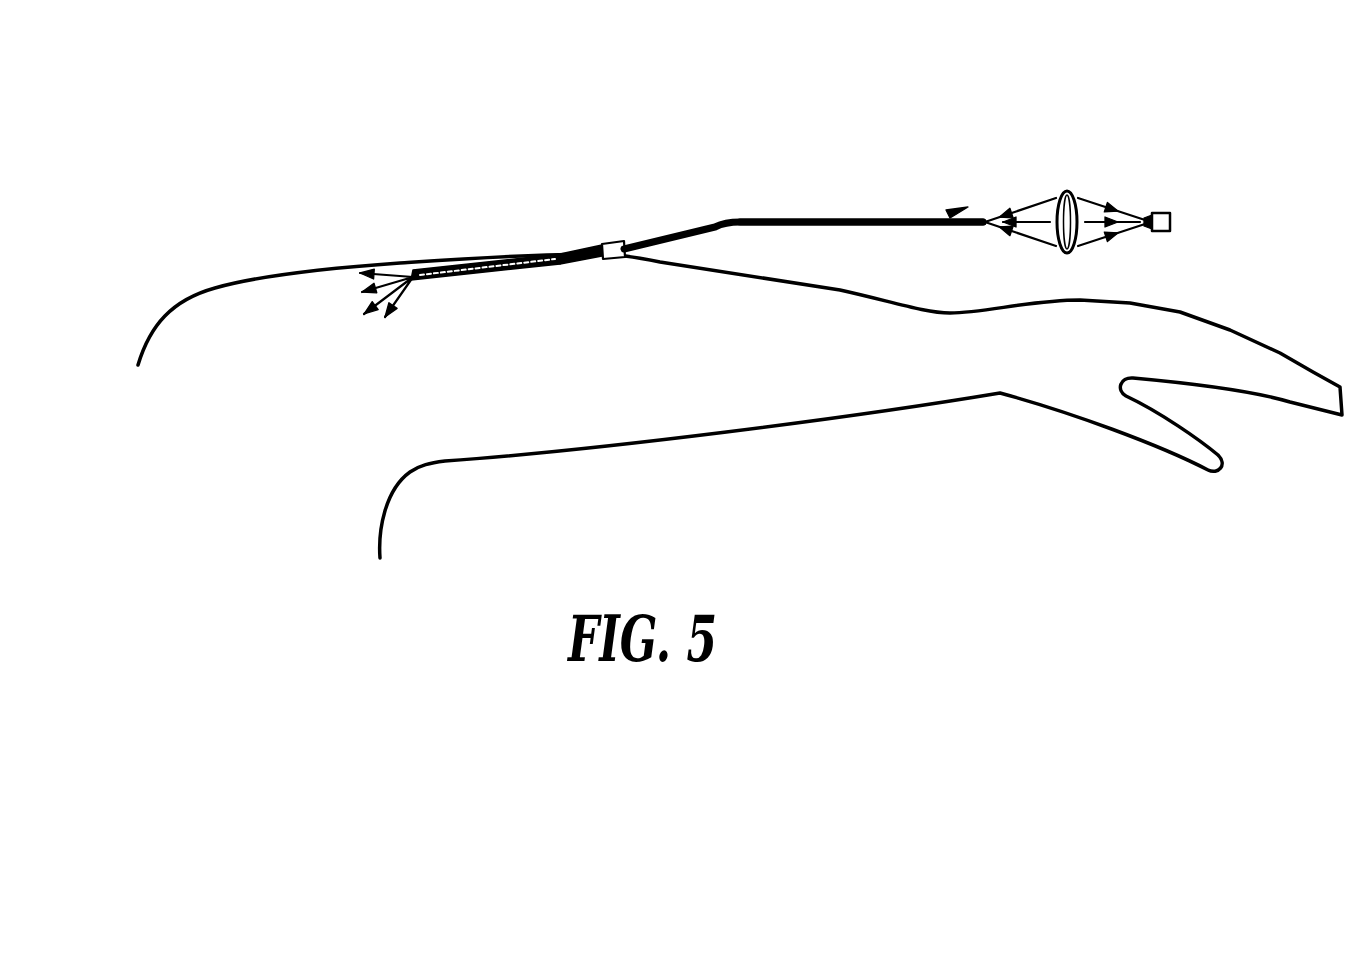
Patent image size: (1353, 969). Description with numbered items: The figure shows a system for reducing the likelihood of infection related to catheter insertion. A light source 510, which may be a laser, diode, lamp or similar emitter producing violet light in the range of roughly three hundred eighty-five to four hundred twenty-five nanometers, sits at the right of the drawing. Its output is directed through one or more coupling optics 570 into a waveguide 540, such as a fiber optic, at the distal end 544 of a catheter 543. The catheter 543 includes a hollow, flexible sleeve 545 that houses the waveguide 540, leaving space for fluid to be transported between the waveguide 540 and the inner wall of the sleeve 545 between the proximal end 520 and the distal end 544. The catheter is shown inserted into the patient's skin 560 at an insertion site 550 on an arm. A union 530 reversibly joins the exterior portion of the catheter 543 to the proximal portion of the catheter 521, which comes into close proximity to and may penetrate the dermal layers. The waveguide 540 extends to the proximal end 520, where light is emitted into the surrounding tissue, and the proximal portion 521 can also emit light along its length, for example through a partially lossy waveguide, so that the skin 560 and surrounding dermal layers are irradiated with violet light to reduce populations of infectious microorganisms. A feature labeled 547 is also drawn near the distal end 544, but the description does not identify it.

The light source 510 is at (1171, 213).
The proximal end 520 is at (411, 257).
The proximal portion of the catheter 521 is at (592, 250).
The union 530 is at (613, 241).
The waveguide 540 is at (706, 218).
The catheter 543 is at (715, 106).
The distal end 544 is at (986, 244).
The sleeve 545 is at (878, 226).
The fiber connector end 547 is at (947, 214).
The insertion site 550 is at (564, 280).
The patient's skin 560 is at (800, 388).
The coupling optics 570 is at (1028, 193).